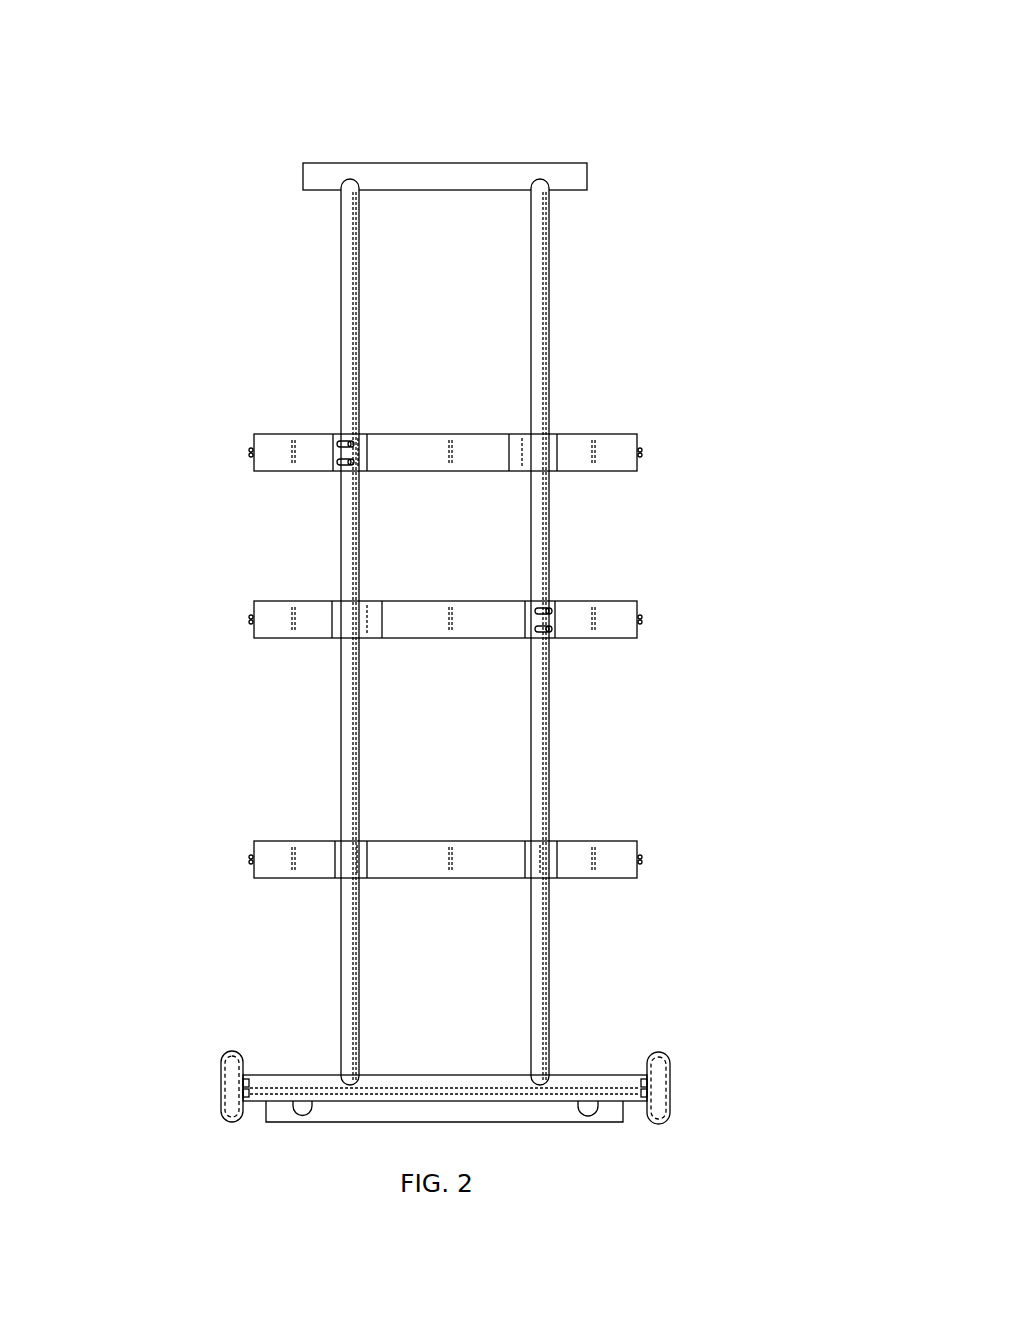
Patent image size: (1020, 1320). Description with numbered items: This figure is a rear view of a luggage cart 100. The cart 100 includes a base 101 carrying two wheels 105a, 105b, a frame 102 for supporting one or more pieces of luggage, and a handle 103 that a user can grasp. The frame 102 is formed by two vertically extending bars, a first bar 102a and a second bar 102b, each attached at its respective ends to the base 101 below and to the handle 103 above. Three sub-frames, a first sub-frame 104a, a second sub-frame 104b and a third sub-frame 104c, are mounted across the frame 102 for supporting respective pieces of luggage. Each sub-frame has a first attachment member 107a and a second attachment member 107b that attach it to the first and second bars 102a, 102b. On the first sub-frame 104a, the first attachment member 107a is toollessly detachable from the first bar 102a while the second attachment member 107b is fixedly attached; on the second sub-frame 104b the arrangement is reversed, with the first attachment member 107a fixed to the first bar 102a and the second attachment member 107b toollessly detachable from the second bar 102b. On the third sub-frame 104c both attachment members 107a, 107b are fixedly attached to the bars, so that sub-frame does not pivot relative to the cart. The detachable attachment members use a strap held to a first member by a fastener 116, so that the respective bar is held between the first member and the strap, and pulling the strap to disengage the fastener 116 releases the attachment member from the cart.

The luggage cart 100 is at (675, 72).
The base 101 is at (280, 1110).
The frame 102 is at (558, 272).
The first bar 102a is at (540, 297).
The second bar 102b is at (349, 232).
The handle 103 is at (315, 178).
The first sub-frame 104a is at (277, 452).
The second sub-frame 104b is at (275, 620).
The third sub-frame 104c is at (280, 858).
The wheel 105a is at (665, 1083).
The wheel 105b is at (232, 1082).
The first attachment member 107a is at (543, 456).
The second attachment member 107b is at (345, 858).
The fastener 116 is at (520, 452).